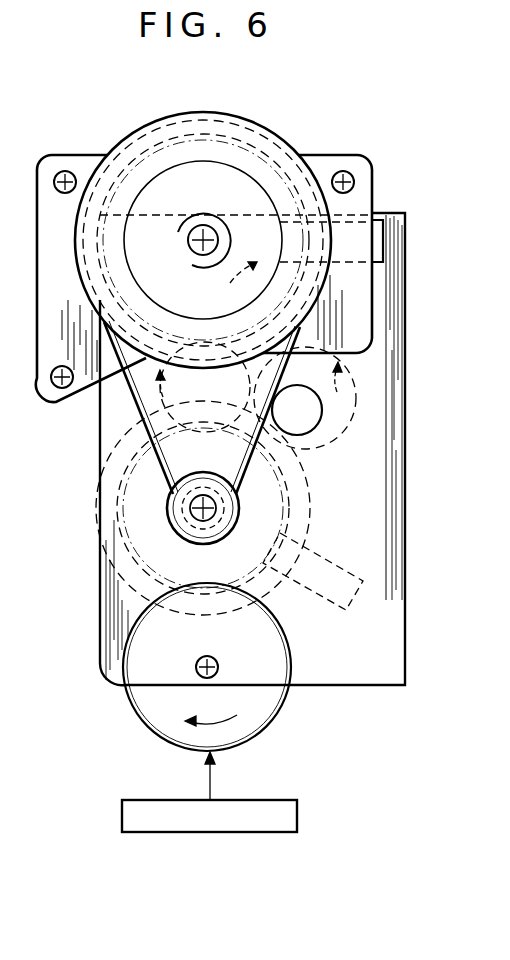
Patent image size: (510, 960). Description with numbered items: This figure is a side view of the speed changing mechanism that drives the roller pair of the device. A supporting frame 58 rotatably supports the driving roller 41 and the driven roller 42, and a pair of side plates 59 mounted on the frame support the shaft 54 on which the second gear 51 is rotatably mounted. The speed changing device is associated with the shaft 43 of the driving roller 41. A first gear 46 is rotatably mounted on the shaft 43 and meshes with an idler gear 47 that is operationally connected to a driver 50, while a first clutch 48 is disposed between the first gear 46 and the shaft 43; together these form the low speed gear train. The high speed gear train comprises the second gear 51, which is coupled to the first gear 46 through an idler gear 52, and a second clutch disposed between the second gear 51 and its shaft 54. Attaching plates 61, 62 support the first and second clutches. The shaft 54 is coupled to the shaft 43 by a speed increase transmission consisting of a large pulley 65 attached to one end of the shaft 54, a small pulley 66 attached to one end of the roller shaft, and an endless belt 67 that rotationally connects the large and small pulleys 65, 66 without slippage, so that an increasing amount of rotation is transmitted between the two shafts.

The driving roller 41 is at (285, 487).
The driven roller 42 is at (352, 380).
The shaft 43 is at (232, 516).
The first gear 46 is at (139, 554).
The idler gear 47 is at (282, 714).
The first clutch 48 is at (116, 447).
The driver 50 is at (298, 815).
The second gear 51 is at (255, 178).
The idler gear 52 is at (132, 399).
The shaft 54 is at (195, 254).
The supporting frame 58 is at (392, 423).
The side plates 59 is at (74, 168).
The attaching plate 61 is at (341, 563).
The attaching plate 62 is at (352, 263).
The large pulley 65 is at (240, 120).
The small pulley 66 is at (175, 519).
The endless belt 67 is at (113, 348).